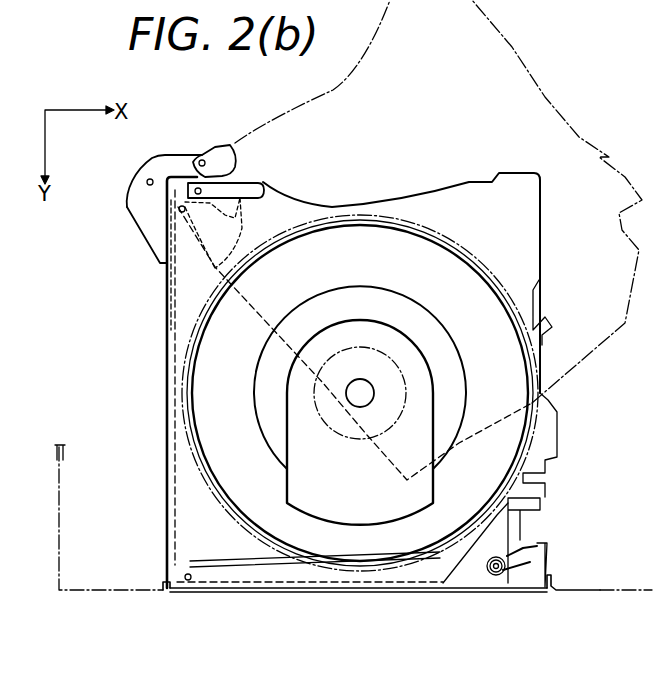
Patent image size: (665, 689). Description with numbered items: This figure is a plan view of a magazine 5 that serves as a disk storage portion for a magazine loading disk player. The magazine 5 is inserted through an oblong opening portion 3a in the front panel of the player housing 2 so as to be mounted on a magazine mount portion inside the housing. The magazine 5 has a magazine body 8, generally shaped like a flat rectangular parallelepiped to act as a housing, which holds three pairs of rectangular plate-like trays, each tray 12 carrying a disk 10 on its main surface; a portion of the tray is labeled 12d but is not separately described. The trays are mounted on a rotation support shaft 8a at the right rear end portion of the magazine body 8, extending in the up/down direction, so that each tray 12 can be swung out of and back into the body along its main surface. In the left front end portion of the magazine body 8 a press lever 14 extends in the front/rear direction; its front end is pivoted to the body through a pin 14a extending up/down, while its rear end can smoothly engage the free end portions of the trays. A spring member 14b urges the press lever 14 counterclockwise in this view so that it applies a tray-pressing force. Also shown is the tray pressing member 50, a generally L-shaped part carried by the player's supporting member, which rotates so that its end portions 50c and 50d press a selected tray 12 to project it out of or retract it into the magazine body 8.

The player housing 2 is at (50, 545).
The opening portion 3a is at (167, 592).
The magazine 5 is at (160, 366).
The magazine body 8 is at (168, 471).
The rotation support shaft 8a is at (178, 209).
The disk 10 is at (525, 458).
The tray 12 is at (572, 143).
The cassette edge 12d is at (170, 288).
The press lever 14 is at (496, 533).
The pin 14a is at (497, 576).
The spring member 14b is at (513, 570).
The tray pressing member 50 is at (152, 166).
The end portion of tray pressing member 50c is at (157, 256).
The end portion of tray pressing member 50d is at (197, 158).